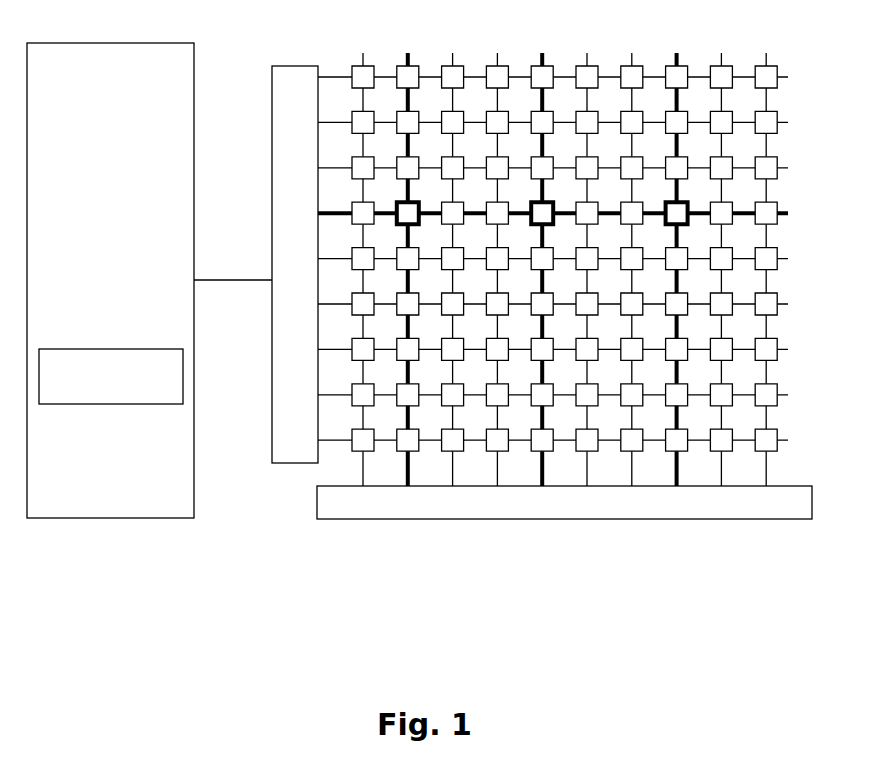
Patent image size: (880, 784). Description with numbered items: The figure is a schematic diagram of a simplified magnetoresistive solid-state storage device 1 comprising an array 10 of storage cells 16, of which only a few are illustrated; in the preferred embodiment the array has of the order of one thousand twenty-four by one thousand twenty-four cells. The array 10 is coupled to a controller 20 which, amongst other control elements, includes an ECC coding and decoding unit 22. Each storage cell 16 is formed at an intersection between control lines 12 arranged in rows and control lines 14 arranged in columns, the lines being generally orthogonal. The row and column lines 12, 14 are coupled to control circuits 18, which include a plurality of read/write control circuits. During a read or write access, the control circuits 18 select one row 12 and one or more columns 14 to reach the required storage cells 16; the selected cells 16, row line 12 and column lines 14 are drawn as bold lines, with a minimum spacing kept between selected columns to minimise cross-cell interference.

The magnetoresistive solid-state storage device 1 is at (442, 313).
The array 10 is at (588, 249).
The control lines (rows) 12 is at (788, 210).
The control lines (columns) 14 is at (541, 55).
The storage cell 16 is at (767, 73).
The control circuits 18 is at (305, 65).
The controller 20 is at (117, 518).
The ECC coding and decoding unit 22 is at (106, 349).